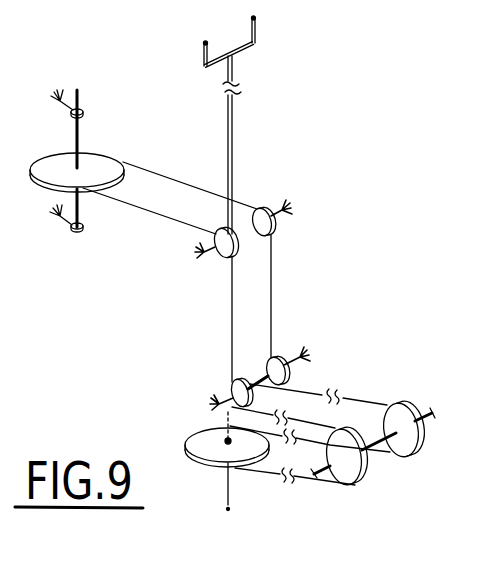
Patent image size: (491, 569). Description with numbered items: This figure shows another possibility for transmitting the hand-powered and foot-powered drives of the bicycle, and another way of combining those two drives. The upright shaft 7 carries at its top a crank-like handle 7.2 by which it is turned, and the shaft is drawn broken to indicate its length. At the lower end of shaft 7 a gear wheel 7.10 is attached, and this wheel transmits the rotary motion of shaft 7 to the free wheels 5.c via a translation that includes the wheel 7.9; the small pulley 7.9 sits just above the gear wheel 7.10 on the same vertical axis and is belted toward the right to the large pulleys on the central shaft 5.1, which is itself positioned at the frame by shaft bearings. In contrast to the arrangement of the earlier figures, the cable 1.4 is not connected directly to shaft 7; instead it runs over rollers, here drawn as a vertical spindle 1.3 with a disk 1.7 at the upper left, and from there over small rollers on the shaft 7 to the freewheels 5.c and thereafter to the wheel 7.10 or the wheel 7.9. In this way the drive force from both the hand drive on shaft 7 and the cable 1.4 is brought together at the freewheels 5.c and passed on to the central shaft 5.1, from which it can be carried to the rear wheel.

The shaft 7 is at (234, 119).
The crank handle 7.2 is at (206, 57).
The spindle shaft 1.3 is at (82, 137).
The disk 1.7 is at (50, 157).
The cable 1.4 is at (167, 218).
The wheel 7.9 is at (205, 393).
The gear wheel 7.10 is at (197, 406).
The central shaft 5.1 is at (418, 410).
The free wheels 5.c is at (370, 467).